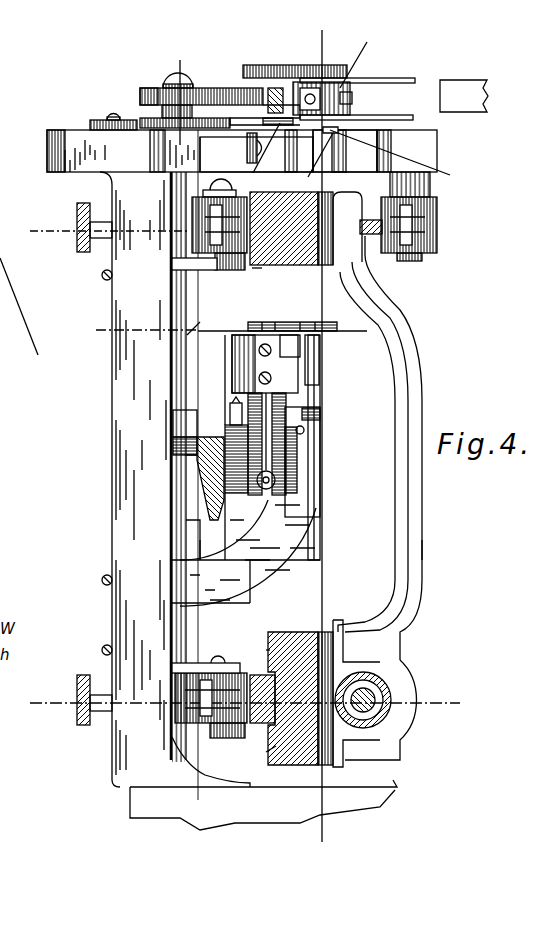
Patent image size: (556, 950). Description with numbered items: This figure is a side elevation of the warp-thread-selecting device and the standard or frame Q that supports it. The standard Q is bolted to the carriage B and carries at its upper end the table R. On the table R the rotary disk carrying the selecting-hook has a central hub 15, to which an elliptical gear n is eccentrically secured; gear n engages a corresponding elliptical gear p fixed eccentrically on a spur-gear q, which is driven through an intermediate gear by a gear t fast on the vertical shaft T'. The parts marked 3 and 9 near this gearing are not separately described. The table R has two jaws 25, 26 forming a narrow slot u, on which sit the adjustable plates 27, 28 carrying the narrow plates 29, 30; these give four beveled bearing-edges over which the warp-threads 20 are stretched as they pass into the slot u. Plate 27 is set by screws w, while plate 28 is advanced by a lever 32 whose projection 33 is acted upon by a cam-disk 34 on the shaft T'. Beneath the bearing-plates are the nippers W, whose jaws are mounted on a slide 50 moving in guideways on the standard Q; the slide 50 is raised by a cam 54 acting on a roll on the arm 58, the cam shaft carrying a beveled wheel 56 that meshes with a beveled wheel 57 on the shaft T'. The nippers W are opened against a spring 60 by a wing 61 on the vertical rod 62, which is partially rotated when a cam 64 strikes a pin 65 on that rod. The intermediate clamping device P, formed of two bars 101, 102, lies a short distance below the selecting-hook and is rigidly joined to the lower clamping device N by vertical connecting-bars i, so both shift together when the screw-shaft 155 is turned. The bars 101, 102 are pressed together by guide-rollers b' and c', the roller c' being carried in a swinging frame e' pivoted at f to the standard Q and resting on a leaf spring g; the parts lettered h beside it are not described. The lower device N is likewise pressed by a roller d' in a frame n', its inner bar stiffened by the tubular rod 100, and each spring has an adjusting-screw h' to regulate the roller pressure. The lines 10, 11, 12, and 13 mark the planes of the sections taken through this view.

The gear 3 is at (215, 86).
The lower bar 9 is at (390, 117).
The section line 10 is at (101, 232).
The section line 11 is at (237, 698).
The section line 12 is at (183, 428).
The section line 13 is at (231, 330).
The central hub 15 is at (352, 98).
The warp-threads 20 is at (324, 43).
The jaw 25 is at (345, 149).
The jaw 26 is at (256, 154).
The adjustable plate 27 is at (259, 157).
The adjustable plate 28 is at (383, 161).
The narrow plate 29 is at (362, 58).
The narrow plate 30 is at (305, 82).
The lever 32 is at (93, 119).
The projection 33 is at (137, 118).
The cam-disk 34 is at (163, 119).
The slide 50 is at (240, 364).
The cam 54 is at (230, 438).
The beveled wheel 56 is at (203, 487).
The beveled wheel 57 is at (180, 438).
The arm 58 is at (232, 386).
The spring 60 is at (320, 418).
The wing 61 is at (312, 360).
The vertical rod 62 is at (318, 473).
The cam 64 is at (296, 462).
The pin 65 is at (304, 432).
The tubular rod 100 is at (397, 715).
The outer bar 101 is at (264, 268).
The inner bar 102 is at (395, 270).
The screw-shaft 155 is at (378, 690).
The carriage B is at (263, 783).
The lower clamping device N is at (276, 702).
The intermediate clamping device P is at (291, 244).
The standard Q is at (144, 479).
The table R is at (463, 158).
The vertical shaft T' is at (200, 321).
The nippers W is at (300, 348).
The guide-roller b' is at (423, 216).
The guide-roller c' is at (193, 224).
The guide-roller d' is at (209, 677).
The swinging frame e' is at (197, 280).
The pivot f is at (335, 750).
The spring g is at (297, 633).
The lug h is at (260, 704).
The adjusting-screw h' is at (76, 464).
The vertical connecting-bars i is at (424, 551).
The elliptical gear n is at (357, 64).
The frame n' is at (219, 746).
The elliptical gear p is at (262, 66).
The spur-gear q is at (258, 85).
The gear t is at (147, 87).
The slot u is at (330, 163).
The screws w is at (246, 151).